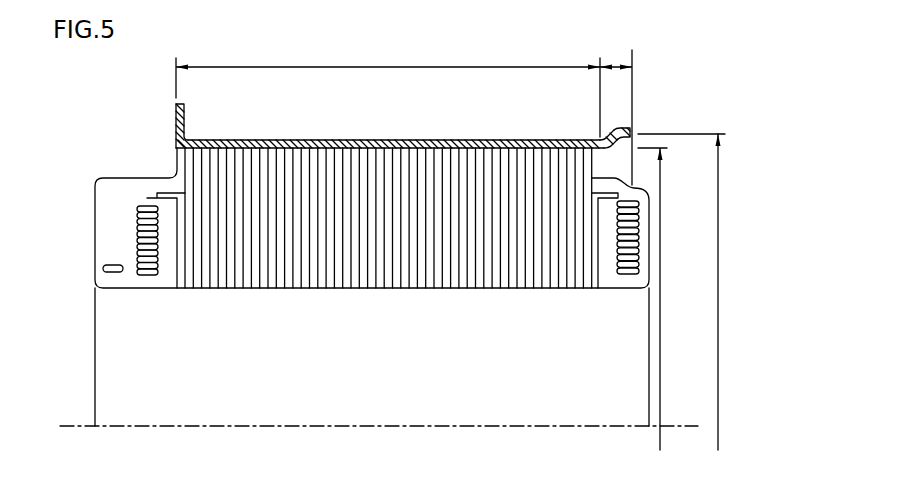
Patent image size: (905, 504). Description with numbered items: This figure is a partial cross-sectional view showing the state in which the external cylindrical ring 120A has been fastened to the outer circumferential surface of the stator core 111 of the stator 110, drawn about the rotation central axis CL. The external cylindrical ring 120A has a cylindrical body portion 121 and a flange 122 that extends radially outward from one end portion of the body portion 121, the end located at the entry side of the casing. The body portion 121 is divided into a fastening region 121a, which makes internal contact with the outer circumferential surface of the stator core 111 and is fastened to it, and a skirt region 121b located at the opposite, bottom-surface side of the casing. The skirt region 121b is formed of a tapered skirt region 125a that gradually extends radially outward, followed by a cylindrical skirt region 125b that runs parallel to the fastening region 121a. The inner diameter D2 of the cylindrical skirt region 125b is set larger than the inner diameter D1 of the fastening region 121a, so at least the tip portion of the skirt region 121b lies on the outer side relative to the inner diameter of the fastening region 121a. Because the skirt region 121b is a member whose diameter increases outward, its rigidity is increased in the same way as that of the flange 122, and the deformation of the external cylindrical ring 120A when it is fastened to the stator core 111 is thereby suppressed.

The stator 110 is at (117, 160).
The stator core 111 is at (362, 273).
The external cylindrical ring 120A is at (668, 102).
The cylindrical body portion 121 is at (355, 141).
The fastening region 121a is at (388, 92).
The skirt region 121b is at (619, 114).
The flange 122 is at (176, 125).
The tapered skirt region 125a is at (602, 136).
The cylindrical skirt region 125b is at (629, 127).
The inner diameter of fastening region D1 is at (667, 299).
The inner diameter of cylindrical skirt region D2 is at (736, 292).
The rotation central axis CL is at (292, 428).